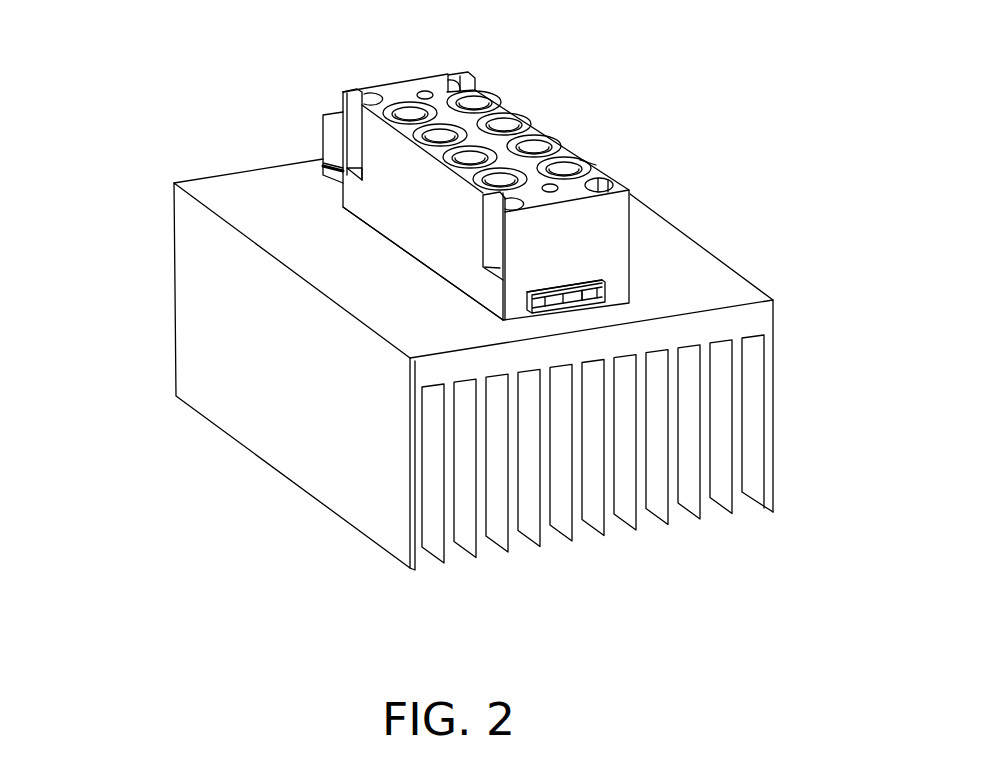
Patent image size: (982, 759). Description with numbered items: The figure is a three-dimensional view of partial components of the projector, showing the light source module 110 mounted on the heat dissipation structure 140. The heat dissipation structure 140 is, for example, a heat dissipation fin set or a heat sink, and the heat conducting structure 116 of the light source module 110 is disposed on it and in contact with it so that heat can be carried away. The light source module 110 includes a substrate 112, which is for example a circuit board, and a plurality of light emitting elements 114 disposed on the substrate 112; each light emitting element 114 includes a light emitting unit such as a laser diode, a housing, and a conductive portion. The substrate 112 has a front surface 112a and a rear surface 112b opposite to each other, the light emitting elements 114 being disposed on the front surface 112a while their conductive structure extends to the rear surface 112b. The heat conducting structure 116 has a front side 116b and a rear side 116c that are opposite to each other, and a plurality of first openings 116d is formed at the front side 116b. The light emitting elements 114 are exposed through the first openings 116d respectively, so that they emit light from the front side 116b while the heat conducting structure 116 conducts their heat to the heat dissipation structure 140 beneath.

The light source module 110 is at (467, 327).
The substrate 112 is at (687, 424).
The front surface 112a is at (583, 272).
The rear surface 112b is at (593, 304).
The light emitting element 114 is at (562, 178).
The heat conducting structure 116 is at (612, 223).
The front side 116b is at (450, 112).
The rear side 116c is at (386, 260).
The first opening 116d is at (592, 159).
The heat dissipation structure 140 is at (277, 413).